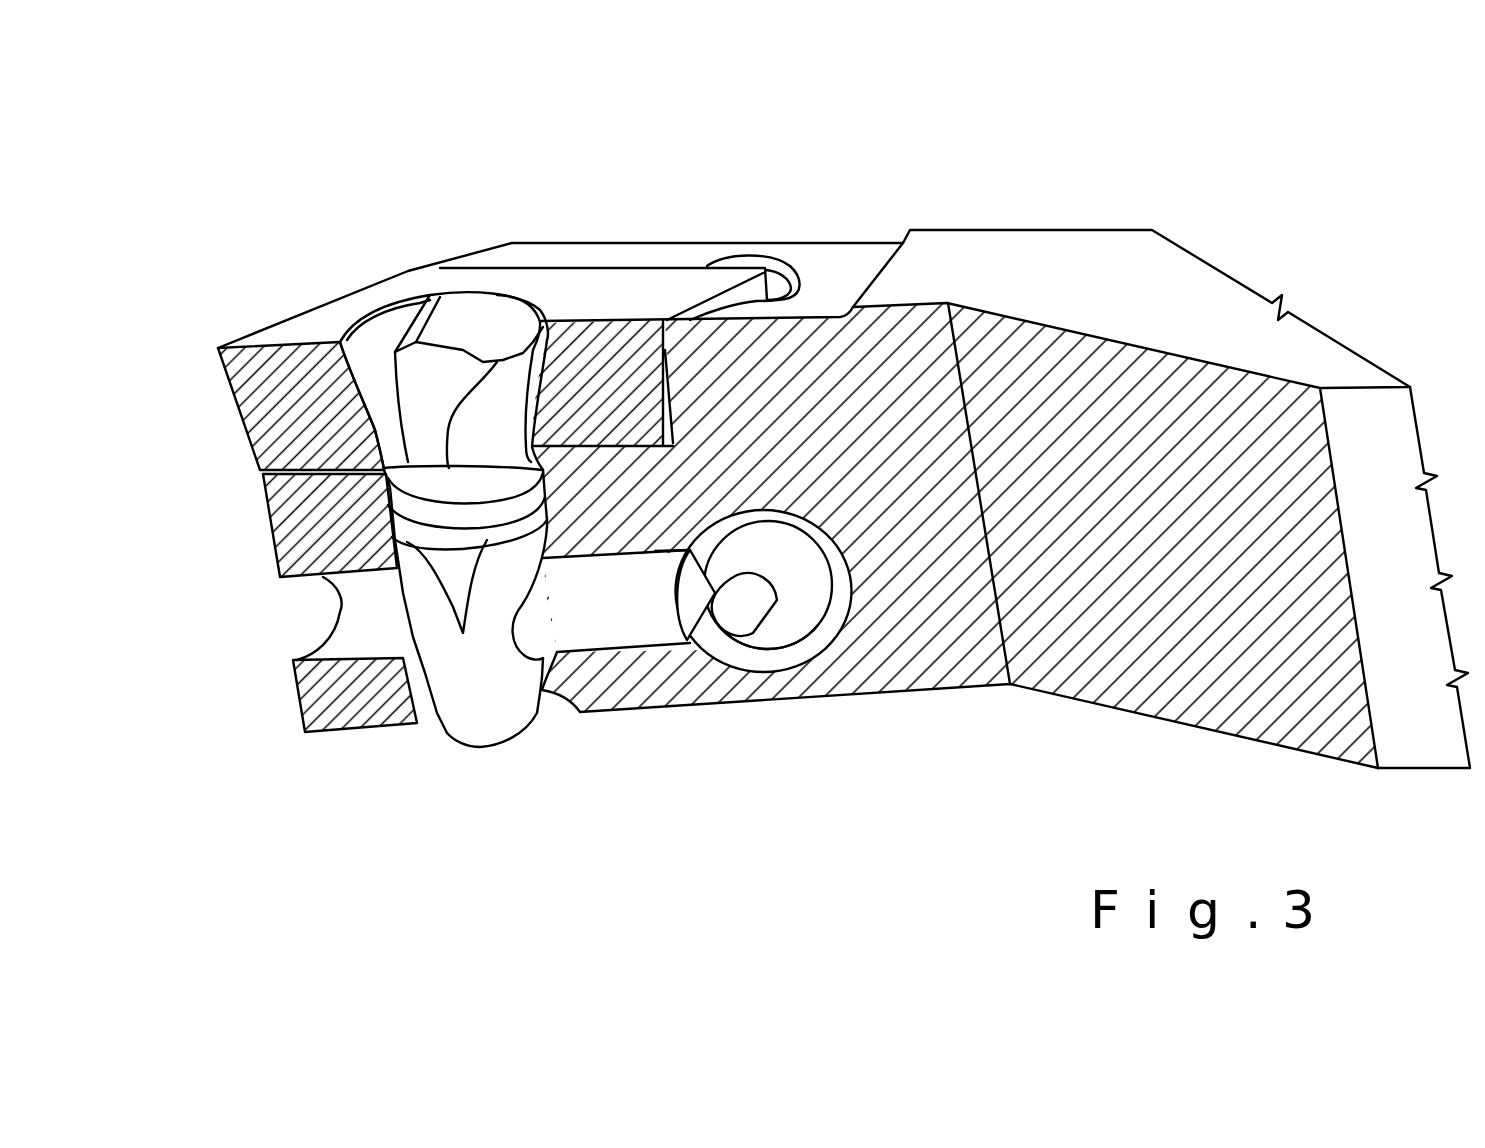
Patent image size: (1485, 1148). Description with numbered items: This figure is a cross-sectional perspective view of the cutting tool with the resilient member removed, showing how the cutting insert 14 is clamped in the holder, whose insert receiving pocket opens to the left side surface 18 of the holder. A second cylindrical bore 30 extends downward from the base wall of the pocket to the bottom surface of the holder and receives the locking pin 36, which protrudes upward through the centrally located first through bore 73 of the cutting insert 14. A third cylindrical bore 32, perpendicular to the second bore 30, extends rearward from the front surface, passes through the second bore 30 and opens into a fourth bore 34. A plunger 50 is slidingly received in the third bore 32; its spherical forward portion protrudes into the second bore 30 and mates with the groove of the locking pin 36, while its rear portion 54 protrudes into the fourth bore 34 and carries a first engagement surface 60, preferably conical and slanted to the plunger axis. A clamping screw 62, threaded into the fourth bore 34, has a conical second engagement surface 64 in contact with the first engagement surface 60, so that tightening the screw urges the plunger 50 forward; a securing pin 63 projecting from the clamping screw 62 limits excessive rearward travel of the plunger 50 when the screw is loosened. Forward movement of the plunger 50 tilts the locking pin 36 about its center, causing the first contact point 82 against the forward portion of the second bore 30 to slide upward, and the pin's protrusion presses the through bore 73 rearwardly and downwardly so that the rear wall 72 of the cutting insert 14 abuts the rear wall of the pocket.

The cutting insert 14 is at (650, 290).
The left side surface 18 is at (1423, 723).
The second cylindrical bore 30 is at (420, 705).
The third cylindrical bore 32 is at (357, 647).
The fourth bore 34 is at (758, 653).
The locking pin 36 is at (470, 323).
The plunger 50 is at (598, 606).
The rear portion 54 is at (670, 583).
The first engagement surface 60 is at (695, 607).
The clamping screw 62 is at (780, 570).
The securing pin 63 is at (738, 628).
The second engagement surface 64 is at (805, 610).
The rear wall 72 is at (753, 294).
The first through bore 73 is at (377, 337).
The first contact point 82 is at (378, 520).